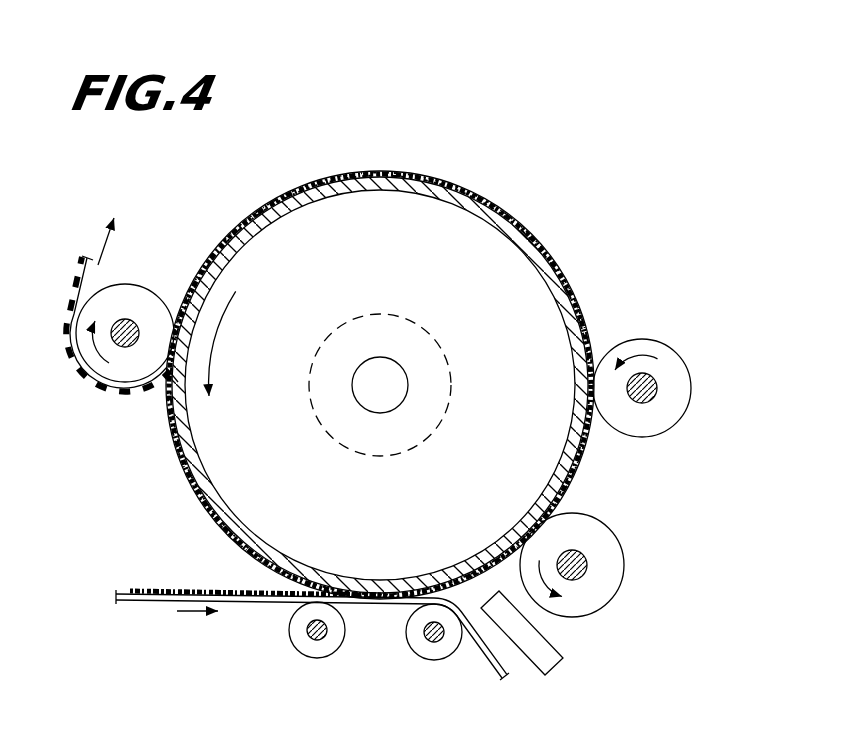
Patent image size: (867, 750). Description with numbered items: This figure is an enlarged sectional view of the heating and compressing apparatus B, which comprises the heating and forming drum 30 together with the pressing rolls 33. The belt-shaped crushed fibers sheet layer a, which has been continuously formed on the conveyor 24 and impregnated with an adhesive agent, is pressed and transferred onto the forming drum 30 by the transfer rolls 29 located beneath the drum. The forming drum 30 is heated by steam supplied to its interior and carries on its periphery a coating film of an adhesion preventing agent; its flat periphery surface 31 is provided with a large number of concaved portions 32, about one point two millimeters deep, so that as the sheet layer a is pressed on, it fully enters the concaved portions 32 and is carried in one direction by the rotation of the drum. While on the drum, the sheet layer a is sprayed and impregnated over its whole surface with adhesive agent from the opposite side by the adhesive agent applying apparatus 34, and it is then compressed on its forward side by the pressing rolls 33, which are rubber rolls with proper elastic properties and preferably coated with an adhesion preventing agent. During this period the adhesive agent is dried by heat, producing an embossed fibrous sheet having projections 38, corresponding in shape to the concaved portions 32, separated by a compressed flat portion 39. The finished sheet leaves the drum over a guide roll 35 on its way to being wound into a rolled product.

The conveyor 24 is at (160, 592).
The sheet layer a is at (247, 597).
The transfer rolls 29 is at (417, 632).
The forming drum 30 is at (572, 318).
The flat periphery surface 31 is at (184, 458).
The concaved portions 32 is at (178, 425).
The pressing rolls 33 is at (600, 533).
The adhesive agent applying apparatus 34 is at (538, 660).
The guide roll 35 is at (146, 298).
The projections 38 is at (562, 477).
The compressed flat portion 39 is at (550, 507).
The heating and compressing apparatus B is at (542, 232).